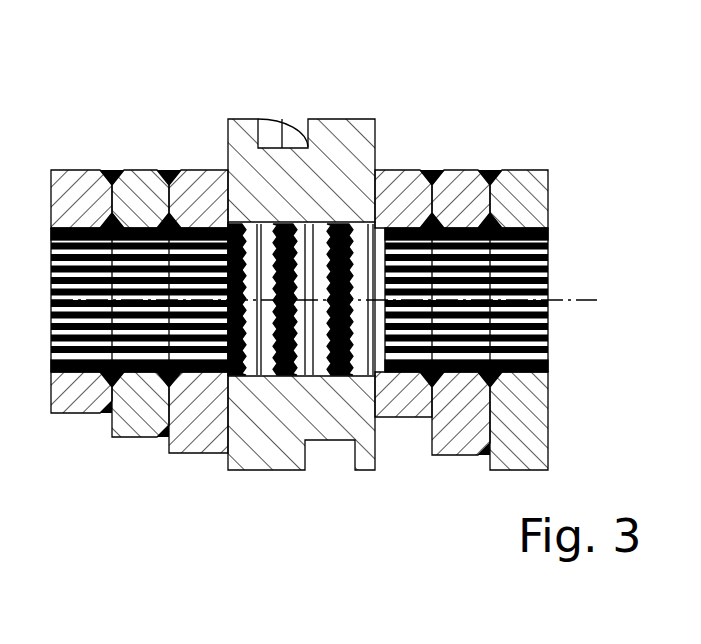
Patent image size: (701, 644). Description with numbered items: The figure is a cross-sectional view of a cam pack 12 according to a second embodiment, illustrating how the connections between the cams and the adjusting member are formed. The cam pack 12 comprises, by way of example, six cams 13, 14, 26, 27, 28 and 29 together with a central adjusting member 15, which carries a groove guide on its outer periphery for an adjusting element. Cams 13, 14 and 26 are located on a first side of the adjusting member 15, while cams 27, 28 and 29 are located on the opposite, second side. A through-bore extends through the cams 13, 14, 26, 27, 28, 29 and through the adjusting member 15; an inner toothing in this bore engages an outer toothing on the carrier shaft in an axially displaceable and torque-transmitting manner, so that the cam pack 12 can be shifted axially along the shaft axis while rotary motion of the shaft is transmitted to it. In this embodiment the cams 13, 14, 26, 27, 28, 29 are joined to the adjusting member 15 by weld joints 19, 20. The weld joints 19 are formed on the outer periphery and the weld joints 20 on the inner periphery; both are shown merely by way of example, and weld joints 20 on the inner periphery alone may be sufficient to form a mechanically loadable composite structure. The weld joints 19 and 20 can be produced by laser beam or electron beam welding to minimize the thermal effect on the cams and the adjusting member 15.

The cam pack 12 is at (259, 508).
The cam 13 is at (75, 170).
The cam 14 is at (137, 170).
The adjusting member 15 is at (333, 119).
The weld joint 19 is at (102, 170).
The weld joint 20 is at (162, 375).
The cam 26 is at (187, 170).
The cam 27 is at (400, 170).
The cam 28 is at (457, 170).
The cam 29 is at (538, 170).